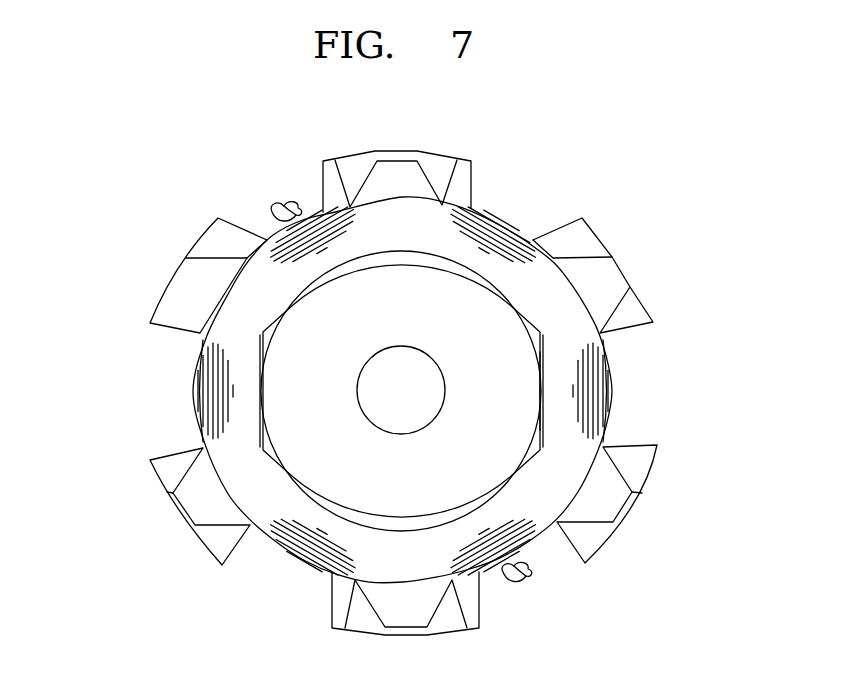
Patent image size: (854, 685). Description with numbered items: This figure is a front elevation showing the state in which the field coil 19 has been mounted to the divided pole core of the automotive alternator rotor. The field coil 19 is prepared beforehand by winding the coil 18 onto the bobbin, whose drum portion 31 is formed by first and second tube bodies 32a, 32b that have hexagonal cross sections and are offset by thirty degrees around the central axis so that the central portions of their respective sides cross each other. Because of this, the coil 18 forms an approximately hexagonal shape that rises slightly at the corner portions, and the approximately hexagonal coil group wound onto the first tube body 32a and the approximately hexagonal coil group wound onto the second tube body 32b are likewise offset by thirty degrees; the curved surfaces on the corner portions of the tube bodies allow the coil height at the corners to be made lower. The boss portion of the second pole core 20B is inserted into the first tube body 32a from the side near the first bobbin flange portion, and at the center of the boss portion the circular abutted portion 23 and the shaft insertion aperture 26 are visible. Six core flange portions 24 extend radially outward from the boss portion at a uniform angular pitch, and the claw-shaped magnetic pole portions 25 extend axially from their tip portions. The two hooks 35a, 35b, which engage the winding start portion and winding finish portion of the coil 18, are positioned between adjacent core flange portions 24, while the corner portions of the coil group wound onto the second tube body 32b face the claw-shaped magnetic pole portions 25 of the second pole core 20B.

The coil 18 is at (278, 209).
The field coil 19 is at (509, 220).
The second pole core 20B is at (622, 249).
The abutted portion 23 is at (300, 385).
The core flange portions 24 is at (187, 338).
The claw-shaped magnetic pole portions 25 is at (190, 287).
The shaft insertion aperture 26 is at (392, 412).
The drum portion 31 is at (547, 415).
The first tube body 32a is at (523, 318).
The second tube body 32b is at (543, 372).
The hook 35a is at (281, 207).
The hook 35b is at (522, 578).